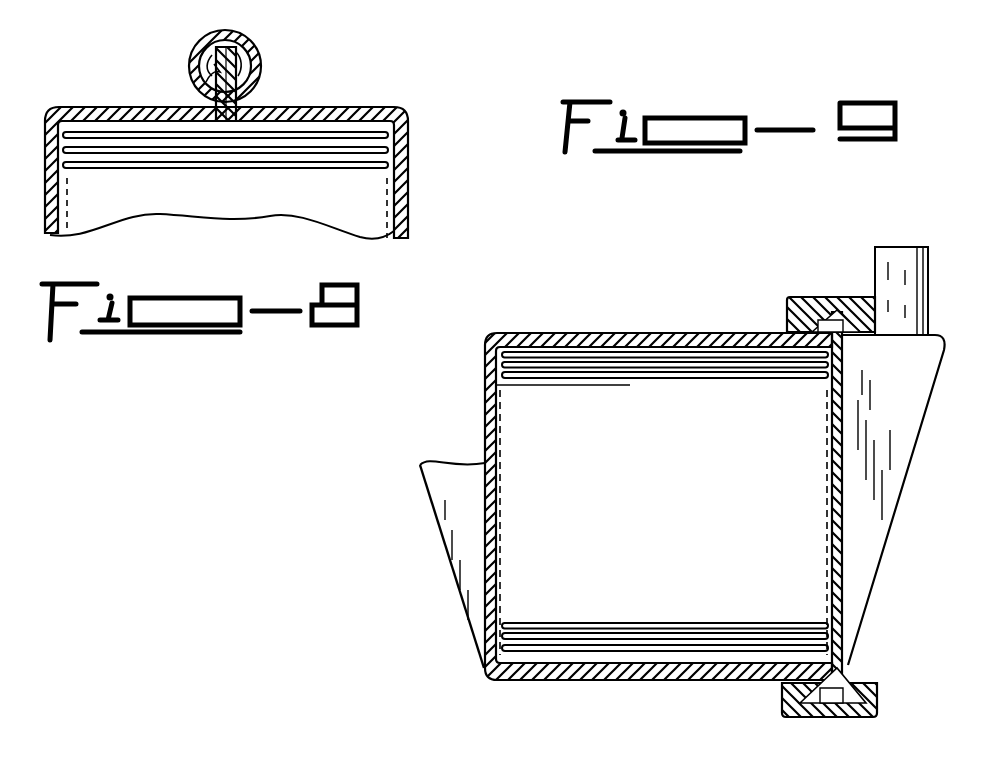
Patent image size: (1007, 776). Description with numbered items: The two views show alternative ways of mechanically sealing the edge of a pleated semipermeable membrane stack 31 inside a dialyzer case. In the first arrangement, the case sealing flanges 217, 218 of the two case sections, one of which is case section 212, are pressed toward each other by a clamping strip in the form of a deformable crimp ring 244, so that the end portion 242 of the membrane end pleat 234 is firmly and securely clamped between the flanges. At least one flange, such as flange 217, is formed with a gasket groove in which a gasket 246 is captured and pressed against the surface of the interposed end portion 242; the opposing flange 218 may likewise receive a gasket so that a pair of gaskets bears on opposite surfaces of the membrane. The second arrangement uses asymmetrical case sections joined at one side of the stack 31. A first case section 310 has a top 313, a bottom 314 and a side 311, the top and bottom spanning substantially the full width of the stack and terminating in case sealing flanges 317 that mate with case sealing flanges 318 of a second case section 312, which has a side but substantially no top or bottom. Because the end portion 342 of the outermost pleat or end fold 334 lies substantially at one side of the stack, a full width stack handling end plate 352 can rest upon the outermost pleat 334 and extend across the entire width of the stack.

In FIG. 8, the stack 31 is at (256, 193).
In FIG. 9, the stack 31 is at (690, 493).
In FIG. 8, the case section 212 is at (396, 212).
In FIG. 8, the case sealing flange 217 is at (222, 58).
In FIG. 8, the case sealing flange 218 is at (236, 62).
In FIG. 8, the membrane end pleat 234 is at (347, 131).
In FIG. 8, the end portion 242 is at (232, 136).
In FIG. 8, the deformable crimp ring 244 is at (258, 72).
In FIG. 8, the gasket 246 is at (214, 70).
In FIG. 9, the first case section 310 is at (545, 684).
In FIG. 9, the side 311 is at (485, 428).
In FIG. 9, the second case section 312 is at (845, 548).
In FIG. 9, the top 313 is at (524, 333).
In FIG. 9, the bottom 314 is at (557, 683).
In FIG. 9, the case sealing flanges 317 is at (812, 300).
In FIG. 9, the case sealing flanges 318 is at (858, 300).
In FIG. 9, the outermost pleat 334 is at (655, 347).
In FIG. 9, the end portion 342 is at (845, 360).
In FIG. 9, the stack handling end plate 352 is at (562, 347).